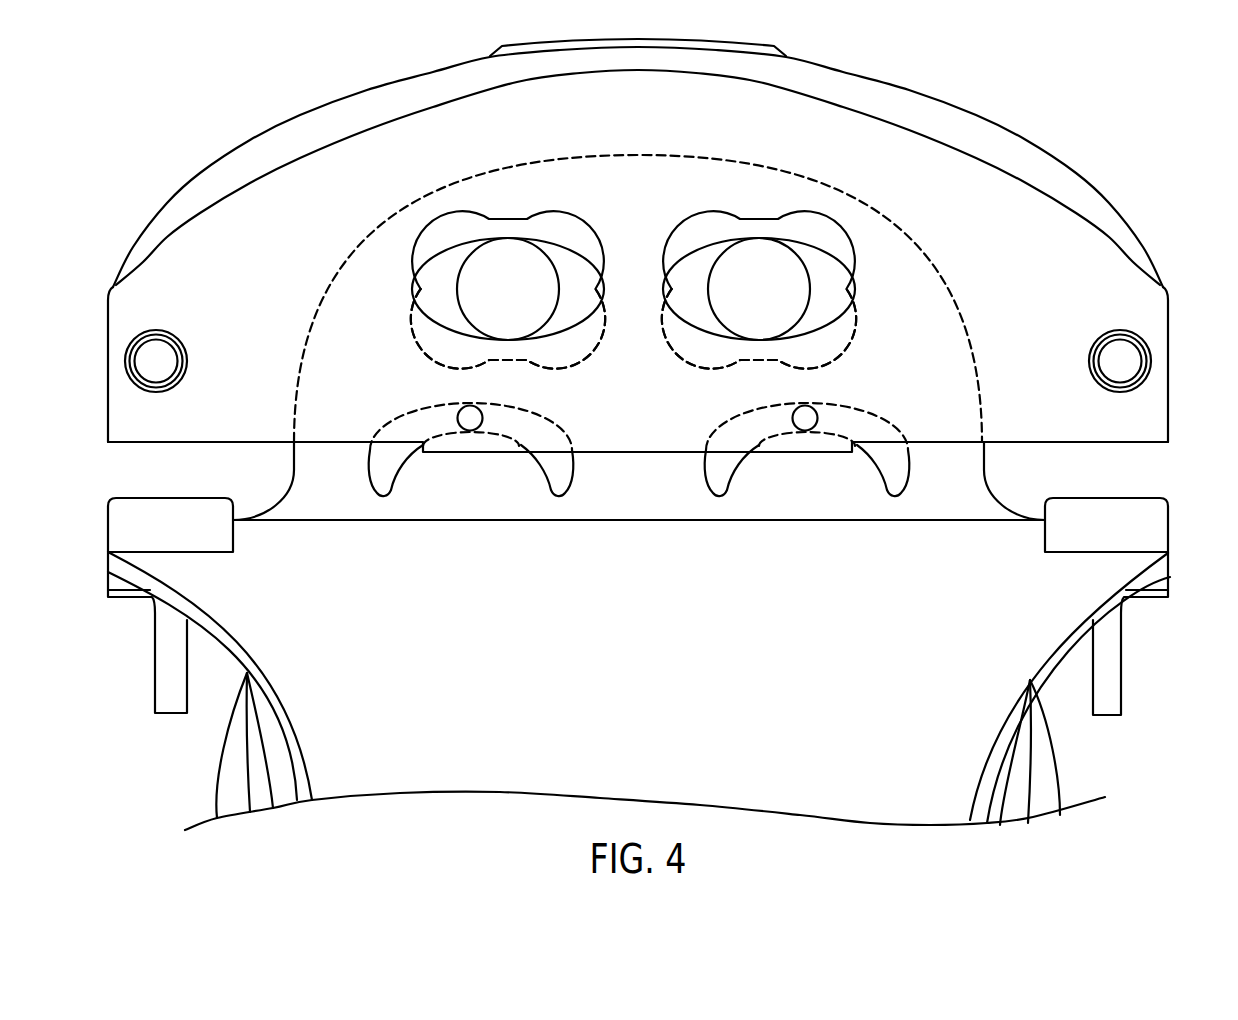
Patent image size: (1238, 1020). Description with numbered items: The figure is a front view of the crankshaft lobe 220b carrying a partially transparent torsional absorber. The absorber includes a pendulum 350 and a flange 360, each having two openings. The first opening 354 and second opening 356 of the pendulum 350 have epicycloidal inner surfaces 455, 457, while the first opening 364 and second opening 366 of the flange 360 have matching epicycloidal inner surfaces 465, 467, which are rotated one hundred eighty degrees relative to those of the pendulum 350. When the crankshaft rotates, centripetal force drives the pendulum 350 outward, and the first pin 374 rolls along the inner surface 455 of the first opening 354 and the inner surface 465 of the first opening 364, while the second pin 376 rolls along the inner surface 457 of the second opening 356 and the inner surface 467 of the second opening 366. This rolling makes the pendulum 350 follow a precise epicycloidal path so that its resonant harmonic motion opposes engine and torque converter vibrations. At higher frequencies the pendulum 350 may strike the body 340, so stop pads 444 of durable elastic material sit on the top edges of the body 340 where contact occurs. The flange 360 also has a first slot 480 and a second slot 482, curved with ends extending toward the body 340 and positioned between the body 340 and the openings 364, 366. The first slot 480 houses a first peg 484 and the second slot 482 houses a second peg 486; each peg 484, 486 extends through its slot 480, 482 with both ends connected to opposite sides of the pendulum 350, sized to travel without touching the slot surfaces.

The lobe 220b is at (147, 223).
The pendulum 350 is at (1031, 158).
The first opening 354 is at (830, 222).
The second opening 356 is at (427, 248).
The first pin 374 is at (748, 252).
The second pin 376 is at (498, 252).
The flange 360 is at (348, 266).
The first opening 364 is at (840, 334).
The second opening 366 is at (420, 318).
The inner surface 455 is at (704, 209).
The inner surface 457 is at (462, 208).
The inner surface 465 is at (857, 311).
The inner surface 467 is at (414, 345).
The stop pad 444 is at (118, 527).
The body 340 is at (226, 633).
The first slot 480 is at (716, 479).
The second slot 482 is at (382, 479).
The first peg 484 is at (806, 431).
The second peg 486 is at (470, 431).